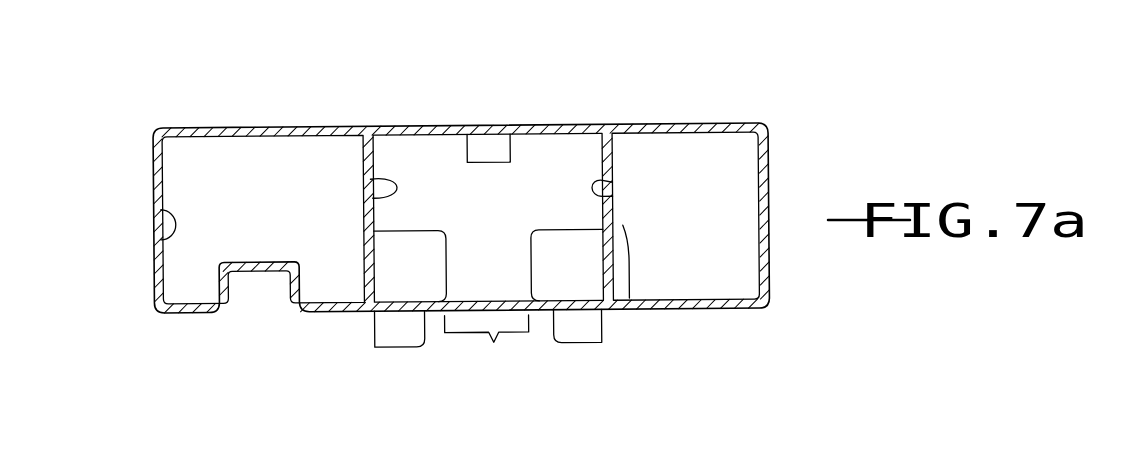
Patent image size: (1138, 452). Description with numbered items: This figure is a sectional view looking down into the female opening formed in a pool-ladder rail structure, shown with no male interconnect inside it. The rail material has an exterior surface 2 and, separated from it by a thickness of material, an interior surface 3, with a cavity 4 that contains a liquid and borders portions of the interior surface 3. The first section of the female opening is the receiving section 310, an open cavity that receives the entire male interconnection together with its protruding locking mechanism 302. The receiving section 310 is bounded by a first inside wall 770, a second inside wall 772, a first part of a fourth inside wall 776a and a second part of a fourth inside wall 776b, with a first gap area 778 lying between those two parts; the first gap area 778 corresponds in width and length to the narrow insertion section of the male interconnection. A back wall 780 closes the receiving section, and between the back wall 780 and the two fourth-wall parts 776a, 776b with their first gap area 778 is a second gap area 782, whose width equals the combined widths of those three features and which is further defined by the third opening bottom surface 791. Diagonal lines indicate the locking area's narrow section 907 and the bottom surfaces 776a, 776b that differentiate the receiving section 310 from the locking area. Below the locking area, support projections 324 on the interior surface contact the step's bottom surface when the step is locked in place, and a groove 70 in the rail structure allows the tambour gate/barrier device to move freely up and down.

The exterior surface 2 is at (198, 127).
The interior surface 3 is at (158, 239).
The cavity 4 is at (248, 228).
The groove 70 is at (255, 303).
The protruding locking mechanism 302 is at (492, 152).
The receiving section 310 is at (383, 366).
The support projections 324 is at (386, 333).
The first inside wall 770 is at (370, 180).
The second inside wall 772 is at (612, 196).
The first part of a fourth inside wall 776a is at (412, 287).
The second part of a fourth inside wall 776b is at (568, 290).
The first gap area 778 is at (493, 343).
The back wall 780 is at (421, 126).
The second gap area 782 is at (558, 170).
The third opening bottom surface 791 is at (518, 222).
The narrow section 907 is at (629, 262).